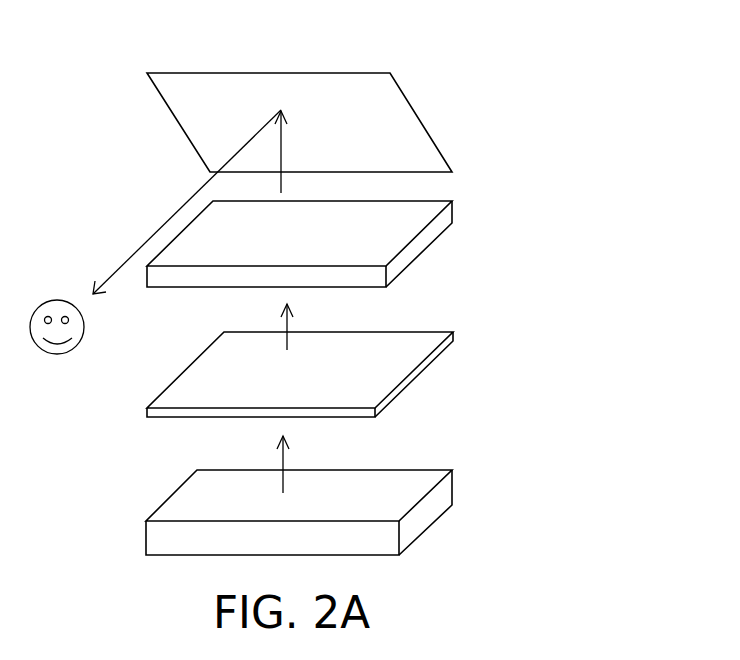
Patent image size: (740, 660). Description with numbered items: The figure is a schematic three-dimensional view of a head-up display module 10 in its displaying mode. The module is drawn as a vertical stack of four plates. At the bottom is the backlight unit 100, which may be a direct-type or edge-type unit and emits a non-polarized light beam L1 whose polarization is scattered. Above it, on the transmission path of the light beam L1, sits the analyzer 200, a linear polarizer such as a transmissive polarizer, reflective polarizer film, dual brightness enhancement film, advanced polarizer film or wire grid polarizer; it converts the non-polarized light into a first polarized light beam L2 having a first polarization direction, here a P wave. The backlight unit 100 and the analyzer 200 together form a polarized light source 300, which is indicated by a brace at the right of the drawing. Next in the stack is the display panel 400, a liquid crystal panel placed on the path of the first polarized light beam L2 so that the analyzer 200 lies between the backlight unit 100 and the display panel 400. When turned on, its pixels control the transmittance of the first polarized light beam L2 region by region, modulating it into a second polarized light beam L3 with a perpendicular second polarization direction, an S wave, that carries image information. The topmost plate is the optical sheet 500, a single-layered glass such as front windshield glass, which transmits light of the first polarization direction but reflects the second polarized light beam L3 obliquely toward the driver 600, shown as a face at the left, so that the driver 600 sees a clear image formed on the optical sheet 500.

The head-up display module 10 is at (598, 577).
The backlight unit 100 is at (410, 493).
The analyzer 200 is at (390, 365).
The polarized light source 300 is at (404, 355).
The display panel 400 is at (395, 228).
The optical sheet 500 is at (402, 123).
The driver 600 is at (50, 357).
The light beam L1 is at (285, 462).
The first polarized light beam L2 is at (285, 323).
The second polarized light beam L3 is at (280, 152).